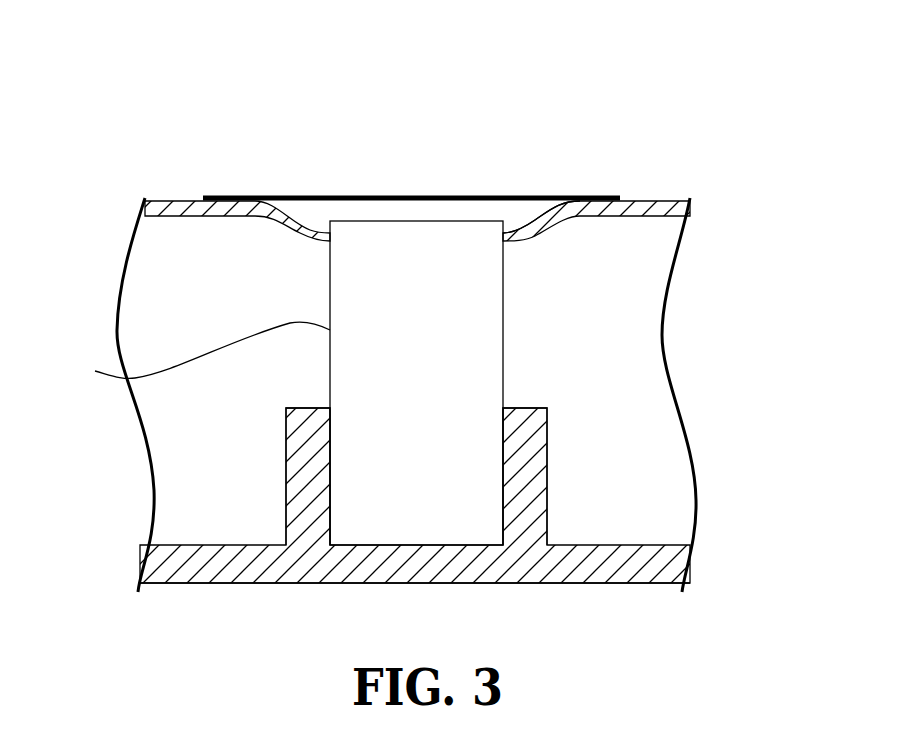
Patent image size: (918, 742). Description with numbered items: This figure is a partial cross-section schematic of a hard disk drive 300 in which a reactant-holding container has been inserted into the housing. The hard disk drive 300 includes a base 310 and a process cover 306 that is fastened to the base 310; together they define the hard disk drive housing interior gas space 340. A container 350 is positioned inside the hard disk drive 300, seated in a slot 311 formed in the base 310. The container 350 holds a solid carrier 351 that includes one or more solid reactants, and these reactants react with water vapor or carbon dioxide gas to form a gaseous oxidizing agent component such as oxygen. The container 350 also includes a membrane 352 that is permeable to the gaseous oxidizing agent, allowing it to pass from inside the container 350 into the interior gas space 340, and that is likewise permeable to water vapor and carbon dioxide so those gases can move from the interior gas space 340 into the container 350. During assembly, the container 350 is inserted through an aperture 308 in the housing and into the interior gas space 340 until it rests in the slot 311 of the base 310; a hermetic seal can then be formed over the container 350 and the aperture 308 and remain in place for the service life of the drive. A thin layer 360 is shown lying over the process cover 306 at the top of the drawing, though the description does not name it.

The hard disk drive 300 is at (663, 149).
The process cover 306 is at (636, 217).
The aperture 308 is at (505, 242).
The base 310 is at (650, 540).
The slot 311 is at (547, 460).
The hard disk drive housing interior gas space 340 is at (208, 512).
The container 350 is at (193, 353).
The solid carrier 351 is at (392, 256).
The membrane 352 is at (393, 548).
The top conductive layer 360 is at (531, 196).